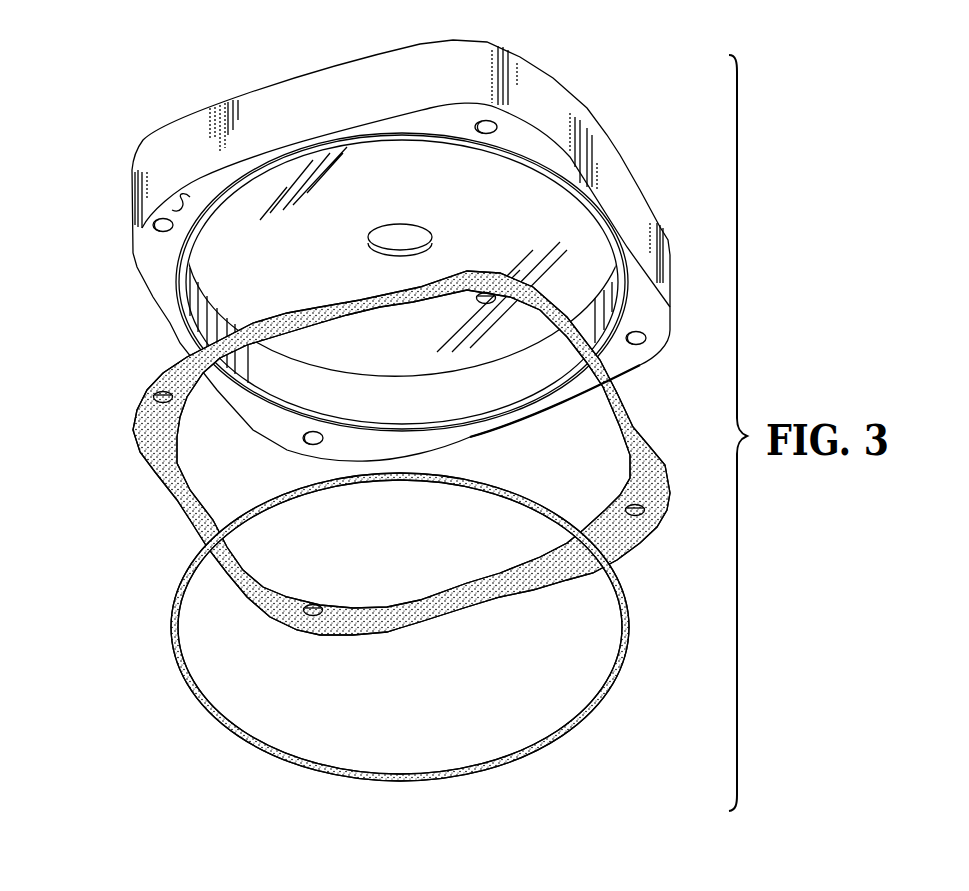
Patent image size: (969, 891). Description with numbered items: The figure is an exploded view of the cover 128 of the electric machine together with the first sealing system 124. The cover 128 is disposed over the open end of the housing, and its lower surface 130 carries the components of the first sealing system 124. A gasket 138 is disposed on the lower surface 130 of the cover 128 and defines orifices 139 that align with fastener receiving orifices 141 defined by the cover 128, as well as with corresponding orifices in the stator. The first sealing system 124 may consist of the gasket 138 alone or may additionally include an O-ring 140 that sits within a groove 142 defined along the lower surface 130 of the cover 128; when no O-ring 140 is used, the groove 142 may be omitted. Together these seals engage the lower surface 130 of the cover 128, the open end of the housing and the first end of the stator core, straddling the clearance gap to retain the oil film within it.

The first sealing system 124 is at (376, 449).
The cover 128 is at (150, 133).
The lower surface 130 is at (172, 210).
The gasket 138 is at (420, 622).
The orifices 139 is at (163, 405).
The O-ring 140 is at (352, 778).
The fastener receiving orifices 141 is at (160, 232).
The groove 142 is at (200, 266).